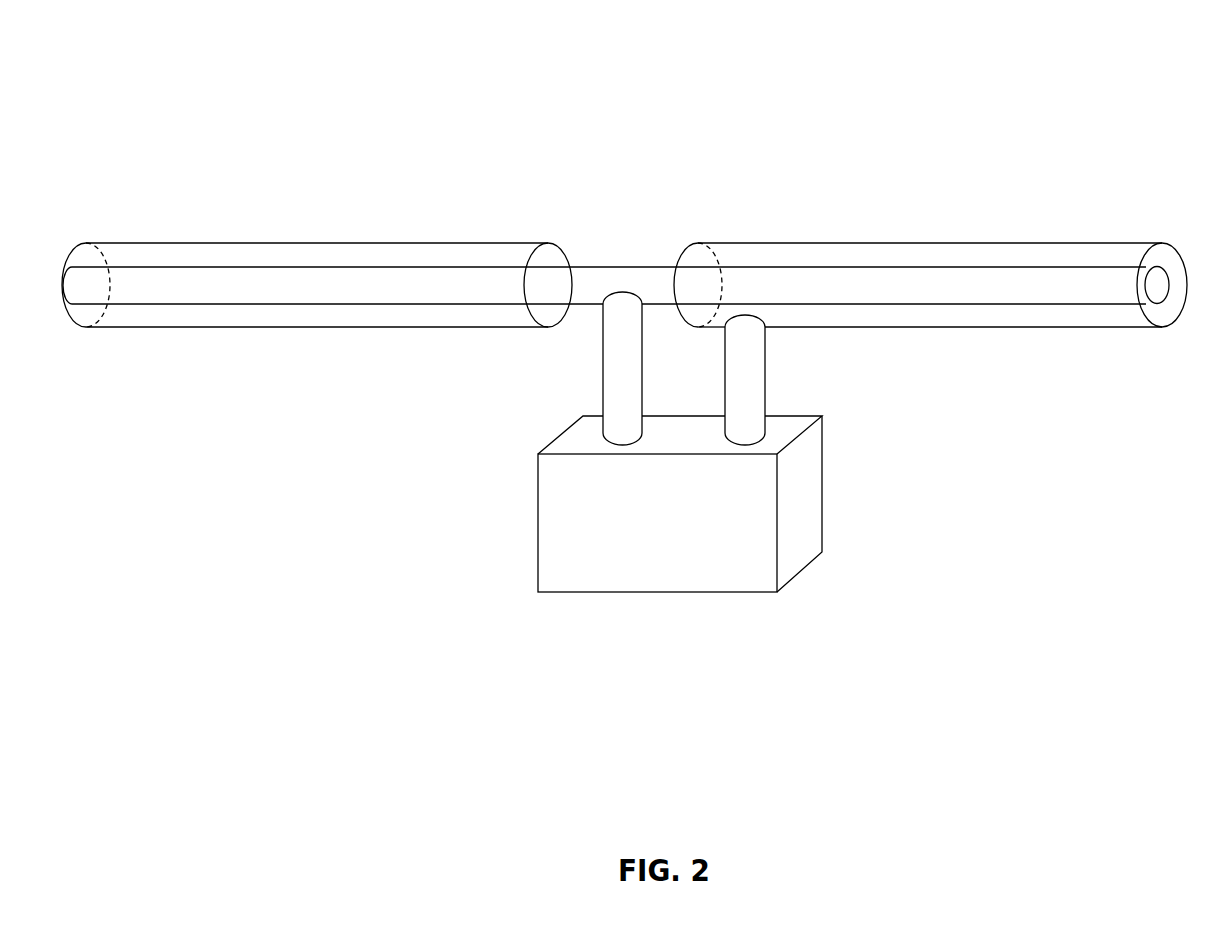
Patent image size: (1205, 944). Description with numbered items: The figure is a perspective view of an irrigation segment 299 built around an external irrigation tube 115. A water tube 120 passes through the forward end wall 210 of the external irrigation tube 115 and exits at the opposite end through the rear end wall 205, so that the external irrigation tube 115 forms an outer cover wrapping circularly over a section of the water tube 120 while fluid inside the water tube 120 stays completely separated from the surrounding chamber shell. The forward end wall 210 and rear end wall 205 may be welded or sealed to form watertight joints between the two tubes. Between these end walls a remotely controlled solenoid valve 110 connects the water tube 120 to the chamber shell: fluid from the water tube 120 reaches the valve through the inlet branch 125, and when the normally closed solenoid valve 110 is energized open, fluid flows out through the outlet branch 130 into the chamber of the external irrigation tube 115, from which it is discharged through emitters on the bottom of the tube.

The irrigation segment 299 is at (292, 58).
The solenoid valve 110 is at (538, 520).
The external irrigation tube 115 is at (171, 243).
The water tube 120 is at (632, 265).
The inlet branch 125 is at (607, 405).
The outlet branch 130 is at (760, 405).
The rear end wall 205 is at (548, 255).
The forward end wall 210 is at (77, 258).